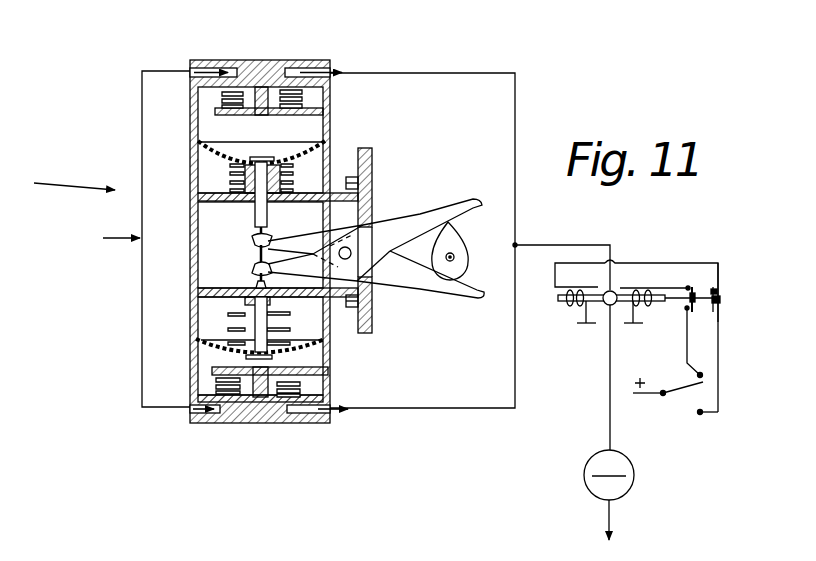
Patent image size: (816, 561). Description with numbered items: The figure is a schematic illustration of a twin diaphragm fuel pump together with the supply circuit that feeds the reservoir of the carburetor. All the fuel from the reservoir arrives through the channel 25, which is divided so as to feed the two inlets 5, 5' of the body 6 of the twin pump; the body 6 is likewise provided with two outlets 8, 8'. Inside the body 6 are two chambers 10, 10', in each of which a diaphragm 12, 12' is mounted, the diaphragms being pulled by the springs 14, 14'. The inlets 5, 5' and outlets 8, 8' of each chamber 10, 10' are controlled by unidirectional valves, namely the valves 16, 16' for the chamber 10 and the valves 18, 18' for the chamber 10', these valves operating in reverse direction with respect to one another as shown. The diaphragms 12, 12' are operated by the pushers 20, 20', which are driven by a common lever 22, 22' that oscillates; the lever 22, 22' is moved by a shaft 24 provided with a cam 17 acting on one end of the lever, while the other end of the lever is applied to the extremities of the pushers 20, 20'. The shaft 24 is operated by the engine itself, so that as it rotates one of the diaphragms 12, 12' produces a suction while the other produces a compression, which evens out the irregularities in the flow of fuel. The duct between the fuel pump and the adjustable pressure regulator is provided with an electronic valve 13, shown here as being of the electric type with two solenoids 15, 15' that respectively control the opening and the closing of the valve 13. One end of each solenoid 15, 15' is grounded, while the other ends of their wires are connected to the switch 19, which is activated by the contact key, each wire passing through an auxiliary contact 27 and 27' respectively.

The inlet 5 is at (201, 57).
The inlet 5' is at (185, 429).
The body 6 is at (65, 185).
The outlet 8 is at (323, 64).
The outlet 8' is at (320, 427).
The chamber 10 is at (241, 140).
The chamber 10' is at (239, 346).
The diaphragm 12 is at (241, 157).
The diaphragm 12' is at (240, 349).
The electronic valve 13 is at (606, 306).
The spring 14 is at (275, 196).
The spring 14' is at (276, 325).
The solenoid 15 is at (570, 311).
The solenoid 15' is at (639, 325).
The unidirectional valve 16 is at (237, 72).
The unidirectional valve 16' is at (322, 109).
The cam 17 is at (459, 233).
The unidirectional valve 18 is at (222, 417).
The unidirectional valve 18' is at (321, 386).
The switch 19 is at (661, 398).
The pusher 20 is at (247, 204).
The pusher 20' is at (240, 298).
The common lever 22 is at (375, 226).
The common lever 22' is at (376, 280).
The shaft 24 is at (464, 260).
The channel 25 is at (136, 241).
The auxiliary contact 27 is at (701, 314).
The auxiliary contact 27' is at (665, 269).